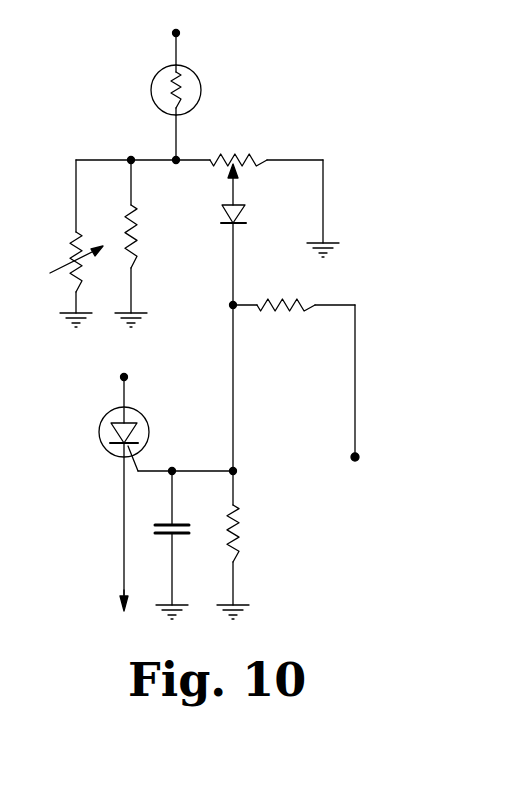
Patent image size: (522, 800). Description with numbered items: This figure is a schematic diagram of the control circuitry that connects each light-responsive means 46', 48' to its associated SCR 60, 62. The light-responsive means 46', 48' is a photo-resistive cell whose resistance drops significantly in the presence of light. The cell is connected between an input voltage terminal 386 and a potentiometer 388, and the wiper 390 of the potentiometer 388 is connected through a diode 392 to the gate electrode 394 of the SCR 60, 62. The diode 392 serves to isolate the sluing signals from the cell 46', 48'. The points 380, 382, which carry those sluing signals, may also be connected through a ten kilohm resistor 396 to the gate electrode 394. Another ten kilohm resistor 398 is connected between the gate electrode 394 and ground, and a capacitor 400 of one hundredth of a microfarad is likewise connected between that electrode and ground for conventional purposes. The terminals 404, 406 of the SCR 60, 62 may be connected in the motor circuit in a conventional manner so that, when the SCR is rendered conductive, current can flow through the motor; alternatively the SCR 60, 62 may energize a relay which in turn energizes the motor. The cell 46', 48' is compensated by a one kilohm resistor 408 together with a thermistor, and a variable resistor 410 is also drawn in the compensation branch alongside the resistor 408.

The input voltage terminal 386 is at (180, 31).
The light-responsive means 46' is at (217, 84).
The light-responsive means 48' is at (217, 84).
The potentiometer 388 is at (224, 166).
The wiper 390 is at (230, 172).
The diode 392 is at (228, 226).
The variable resistor 410 is at (72, 255).
The resistor 408 is at (133, 247).
The resistor 396 is at (293, 310).
The point 380 is at (339, 482).
The point 382 is at (352, 462).
The terminal 404 is at (128, 373).
The SCR 60 is at (120, 439).
The SCR 62 is at (120, 439).
The gate electrode 394 is at (162, 445).
The capacitor 400 is at (177, 523).
The resistor 398 is at (235, 552).
The terminal 406 is at (118, 603).